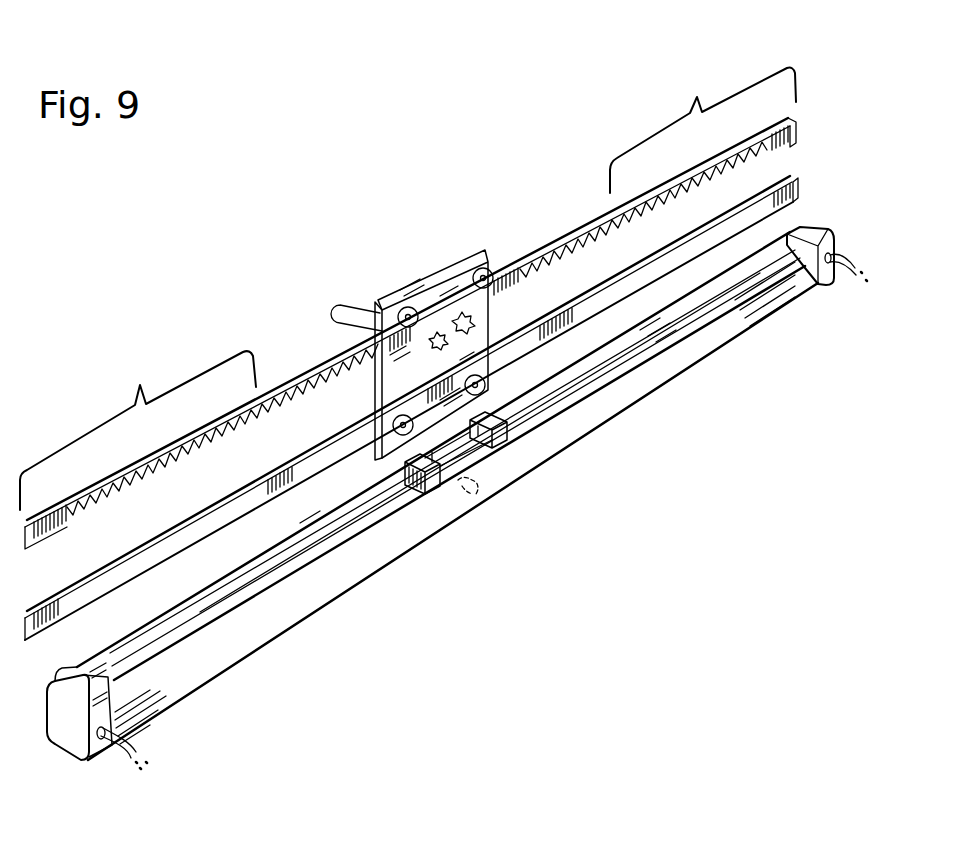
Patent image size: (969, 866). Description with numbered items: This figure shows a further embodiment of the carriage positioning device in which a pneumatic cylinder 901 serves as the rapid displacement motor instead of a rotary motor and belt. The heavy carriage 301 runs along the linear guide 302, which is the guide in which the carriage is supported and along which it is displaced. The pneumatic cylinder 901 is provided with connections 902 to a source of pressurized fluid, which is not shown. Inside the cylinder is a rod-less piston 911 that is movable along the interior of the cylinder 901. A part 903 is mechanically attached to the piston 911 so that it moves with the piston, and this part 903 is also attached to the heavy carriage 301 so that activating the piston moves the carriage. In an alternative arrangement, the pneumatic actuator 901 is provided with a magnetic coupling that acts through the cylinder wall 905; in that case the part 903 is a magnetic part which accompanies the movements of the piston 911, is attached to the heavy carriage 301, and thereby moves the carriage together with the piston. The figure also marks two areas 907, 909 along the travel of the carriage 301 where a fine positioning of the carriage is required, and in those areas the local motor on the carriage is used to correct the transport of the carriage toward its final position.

The carriage 301 is at (433, 288).
The linear guide 302 is at (101, 480).
The pneumatic cylinder 901 is at (646, 381).
The connections 902 is at (102, 732).
The part 903 is at (498, 443).
The cylinder wall 905 is at (282, 583).
The area 907 is at (97, 429).
The area 909 is at (643, 143).
The rod-less piston 911 is at (471, 482).